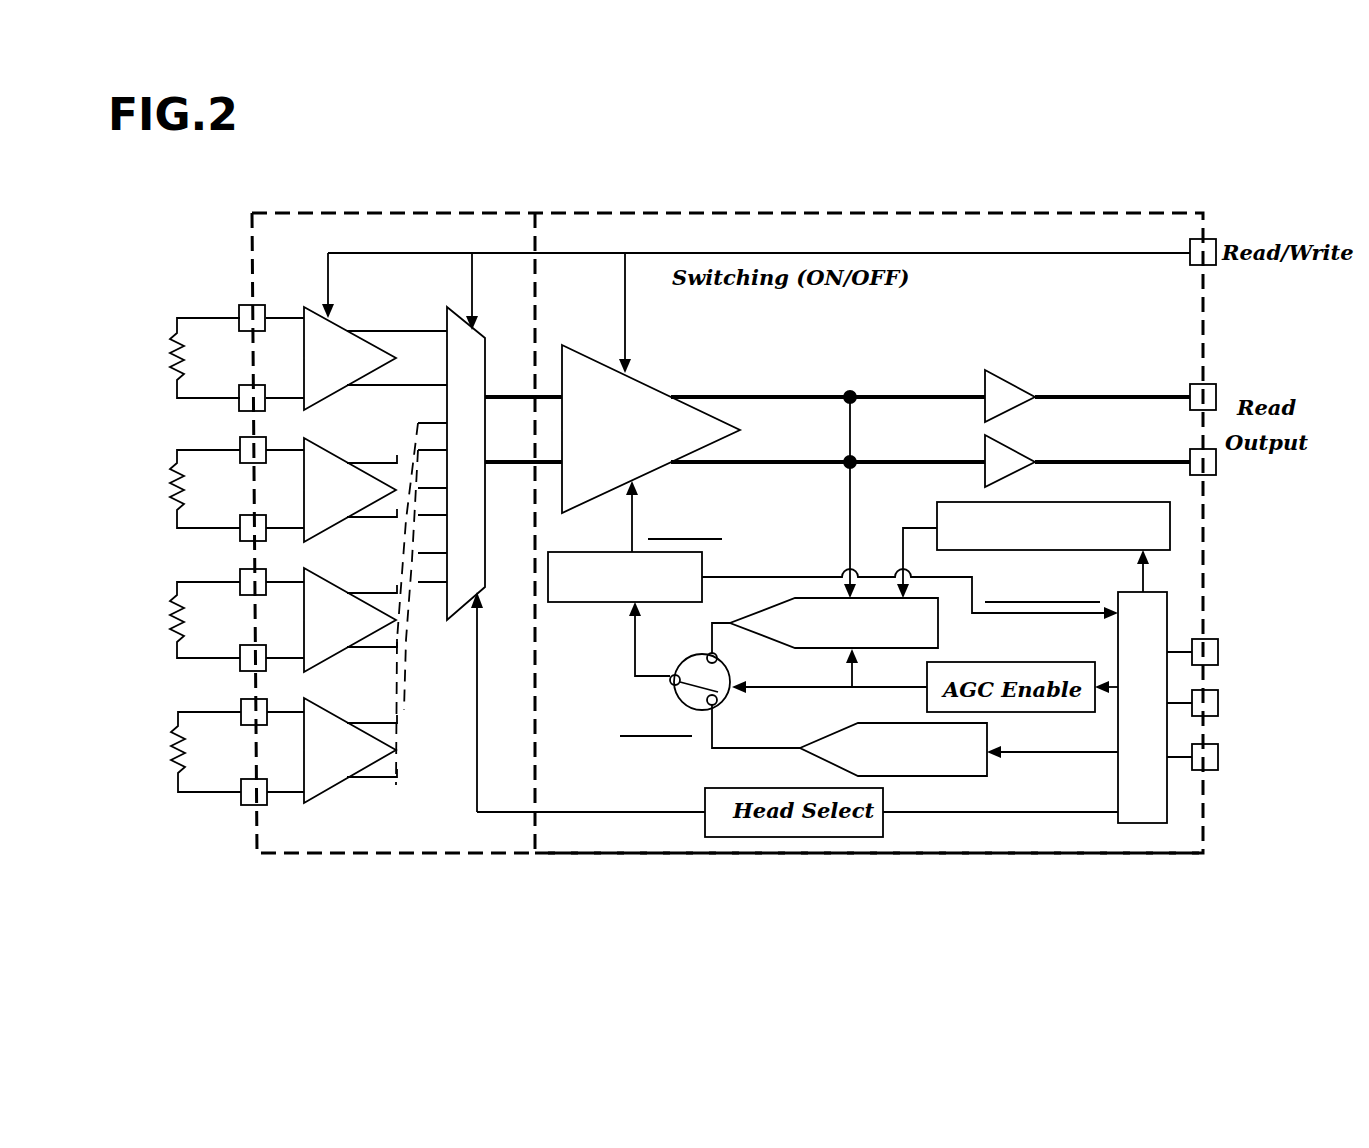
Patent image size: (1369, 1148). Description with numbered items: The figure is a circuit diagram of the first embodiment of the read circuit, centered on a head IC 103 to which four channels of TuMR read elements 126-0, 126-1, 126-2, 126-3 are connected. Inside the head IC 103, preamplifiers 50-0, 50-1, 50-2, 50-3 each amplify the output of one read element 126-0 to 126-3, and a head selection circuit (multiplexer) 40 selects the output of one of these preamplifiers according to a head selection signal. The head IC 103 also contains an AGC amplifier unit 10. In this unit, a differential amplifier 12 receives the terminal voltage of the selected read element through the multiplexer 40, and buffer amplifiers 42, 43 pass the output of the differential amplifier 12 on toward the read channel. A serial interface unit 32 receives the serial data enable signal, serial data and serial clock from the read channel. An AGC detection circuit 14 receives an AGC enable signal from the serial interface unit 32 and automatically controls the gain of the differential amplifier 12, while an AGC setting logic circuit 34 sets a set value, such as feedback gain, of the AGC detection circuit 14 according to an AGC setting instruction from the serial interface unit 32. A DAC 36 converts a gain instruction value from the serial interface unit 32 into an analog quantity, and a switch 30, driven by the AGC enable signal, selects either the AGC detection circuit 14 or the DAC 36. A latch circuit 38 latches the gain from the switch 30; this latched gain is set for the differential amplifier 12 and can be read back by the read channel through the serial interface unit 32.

The head IC 103 is at (912, 200).
The AGC amplifier unit 10 is at (977, 840).
The read element 126-0 is at (174, 330).
The read element 126-1 is at (178, 474).
The read element 126-2 is at (178, 605).
The read element 126-3 is at (176, 772).
The preamplifier 50-0 is at (344, 332).
The preamplifier 50-1 is at (320, 460).
The preamplifier 50-2 is at (320, 602).
The preamplifier 50-3 is at (328, 790).
The head selection circuit (multiplexer) 40 is at (480, 336).
The differential amplifier 12 is at (647, 388).
The buffer amplifier 42 is at (1006, 391).
The buffer amplifier 43 is at (1020, 475).
The latch circuit 38 is at (566, 604).
The AGC detection circuit 14 is at (933, 632).
The switch 30 is at (670, 681).
The AGC setting logic circuit 34 is at (1068, 514).
The serial interface unit 32 is at (1153, 606).
The DAC (Digital/Analog Convertor) 36 is at (975, 778).